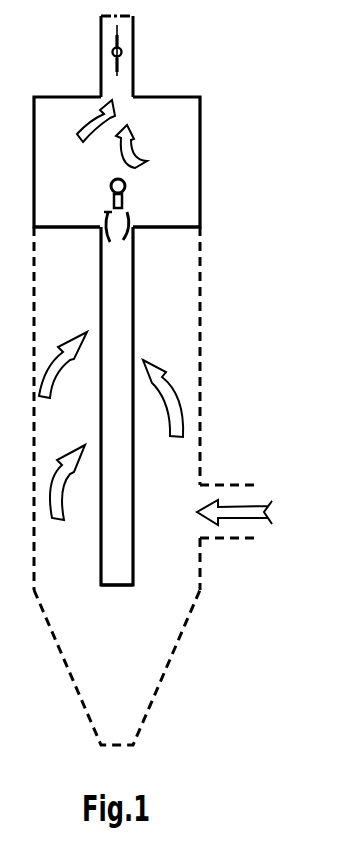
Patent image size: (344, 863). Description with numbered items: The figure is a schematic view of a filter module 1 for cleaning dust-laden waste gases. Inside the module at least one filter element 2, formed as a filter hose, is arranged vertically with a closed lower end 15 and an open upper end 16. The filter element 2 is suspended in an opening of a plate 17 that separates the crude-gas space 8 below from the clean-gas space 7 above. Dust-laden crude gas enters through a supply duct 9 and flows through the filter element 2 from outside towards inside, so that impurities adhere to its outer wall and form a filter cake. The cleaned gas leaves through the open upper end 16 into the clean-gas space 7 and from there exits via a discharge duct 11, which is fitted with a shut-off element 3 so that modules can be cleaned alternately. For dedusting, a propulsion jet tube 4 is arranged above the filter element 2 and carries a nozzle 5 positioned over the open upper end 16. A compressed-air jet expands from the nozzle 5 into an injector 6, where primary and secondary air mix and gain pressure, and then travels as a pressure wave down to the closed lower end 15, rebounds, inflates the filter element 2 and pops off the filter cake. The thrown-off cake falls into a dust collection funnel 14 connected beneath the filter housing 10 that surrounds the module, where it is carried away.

The filter module 1 is at (200, 117).
The filter element 2 is at (116, 317).
The shut-off element 3 is at (119, 61).
The propulsion jet tube 4 is at (119, 192).
The nozzle 5 is at (121, 207).
The injector 6 is at (124, 237).
The clean-gas space 7 is at (172, 213).
The crude-gas space 8 is at (172, 290).
The supply duct 9 is at (225, 485).
The filter housing 10 is at (200, 352).
The discharge duct 11 is at (133, 26).
The dust collection funnel 14 is at (163, 668).
The closed lower end 15 is at (125, 585).
The open upper end 16 is at (109, 216).
The plate 17 is at (180, 227).